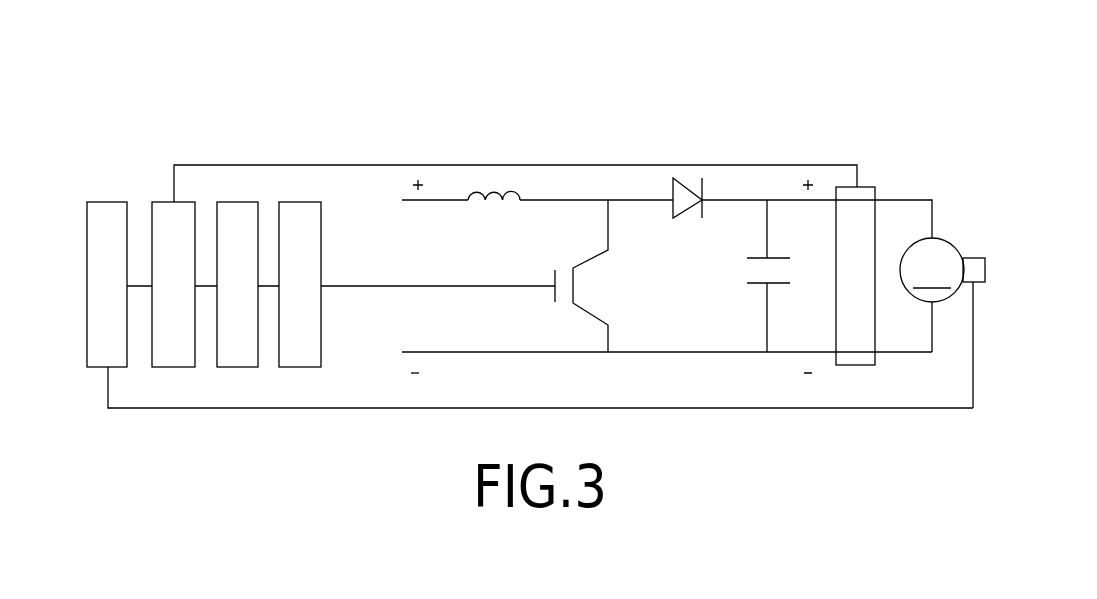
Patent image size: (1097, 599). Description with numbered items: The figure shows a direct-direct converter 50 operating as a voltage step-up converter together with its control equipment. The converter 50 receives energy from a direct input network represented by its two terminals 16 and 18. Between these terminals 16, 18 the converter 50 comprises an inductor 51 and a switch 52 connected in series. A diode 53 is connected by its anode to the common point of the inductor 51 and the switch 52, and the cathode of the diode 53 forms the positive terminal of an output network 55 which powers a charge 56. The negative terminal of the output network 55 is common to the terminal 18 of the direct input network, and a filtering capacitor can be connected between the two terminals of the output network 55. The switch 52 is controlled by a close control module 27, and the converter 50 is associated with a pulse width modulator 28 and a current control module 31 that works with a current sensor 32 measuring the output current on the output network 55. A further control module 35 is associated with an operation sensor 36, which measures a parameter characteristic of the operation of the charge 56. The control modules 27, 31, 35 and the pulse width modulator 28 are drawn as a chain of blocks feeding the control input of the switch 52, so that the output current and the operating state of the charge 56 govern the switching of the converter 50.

The control module 35 is at (107, 202).
The current control module 31 is at (163, 202).
The pulse width modulator 28 is at (238, 202).
The close control module 27 is at (298, 202).
The terminal 16 is at (438, 200).
The terminal 18 is at (452, 351).
The inductor 51 is at (488, 177).
The switch 52 is at (575, 292).
The diode 53 is at (685, 180).
The current sensor 32 is at (853, 365).
The charge 56 is at (932, 295).
The operation sensor 36 is at (985, 270).
The direct-direct converter 50 is at (817, 137).
The output network 55 is at (800, 430).